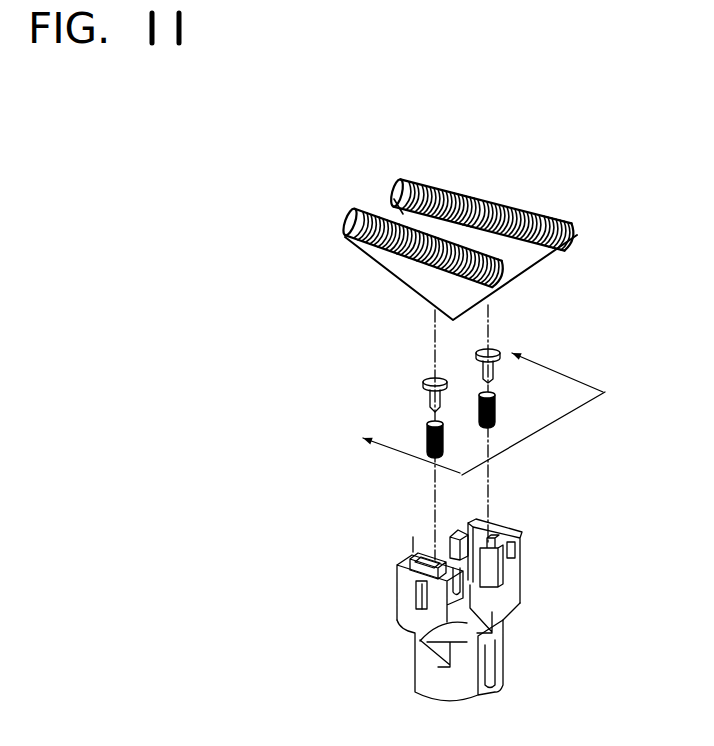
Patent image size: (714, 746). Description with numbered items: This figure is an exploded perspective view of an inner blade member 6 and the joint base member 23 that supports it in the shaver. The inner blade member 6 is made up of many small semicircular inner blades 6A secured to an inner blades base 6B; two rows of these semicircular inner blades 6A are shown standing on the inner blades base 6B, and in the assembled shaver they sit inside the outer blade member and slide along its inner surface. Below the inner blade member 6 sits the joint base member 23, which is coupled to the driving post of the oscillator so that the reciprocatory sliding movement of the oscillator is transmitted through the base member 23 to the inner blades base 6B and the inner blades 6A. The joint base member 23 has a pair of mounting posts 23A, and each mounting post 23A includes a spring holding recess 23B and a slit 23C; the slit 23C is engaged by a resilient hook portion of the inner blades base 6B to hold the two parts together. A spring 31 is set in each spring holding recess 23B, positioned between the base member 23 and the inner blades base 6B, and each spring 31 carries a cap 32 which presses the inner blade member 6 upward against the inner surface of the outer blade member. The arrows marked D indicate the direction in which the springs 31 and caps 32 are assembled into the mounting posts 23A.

The inner blade member 6 is at (465, 162).
The small semicircular inner blades 6A is at (415, 168).
The inner blades base 6B is at (402, 287).
The spring 31 is at (427, 445).
The cap 32 is at (420, 382).
The joint base member 23 is at (474, 587).
The mounting post 23A is at (428, 658).
The spring holding recess 23B is at (412, 548).
The slit 23C is at (410, 598).
The direction of movement D is at (468, 407).